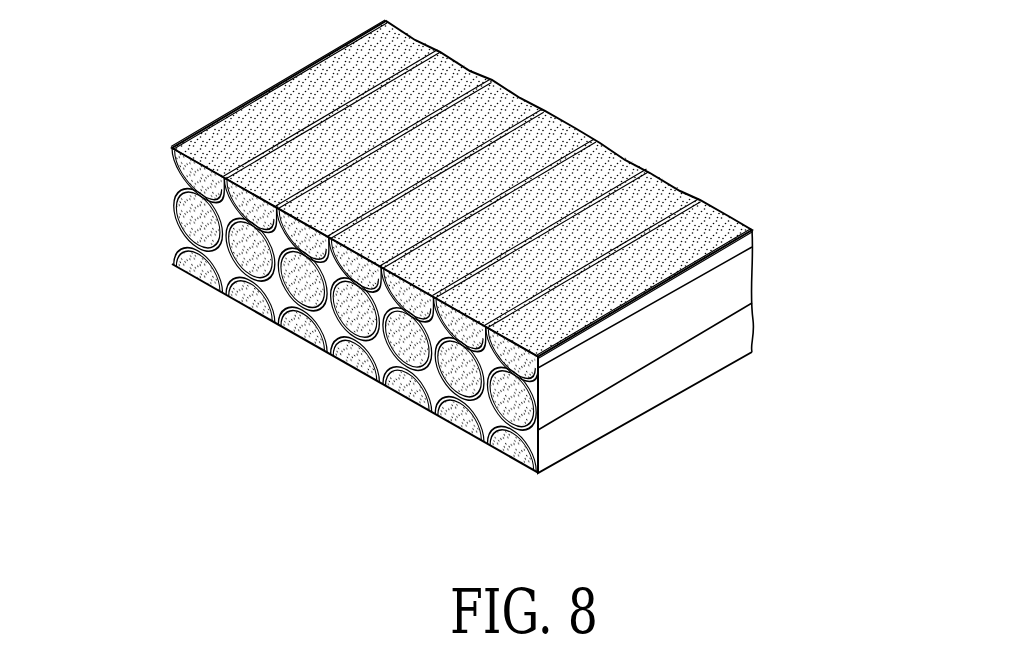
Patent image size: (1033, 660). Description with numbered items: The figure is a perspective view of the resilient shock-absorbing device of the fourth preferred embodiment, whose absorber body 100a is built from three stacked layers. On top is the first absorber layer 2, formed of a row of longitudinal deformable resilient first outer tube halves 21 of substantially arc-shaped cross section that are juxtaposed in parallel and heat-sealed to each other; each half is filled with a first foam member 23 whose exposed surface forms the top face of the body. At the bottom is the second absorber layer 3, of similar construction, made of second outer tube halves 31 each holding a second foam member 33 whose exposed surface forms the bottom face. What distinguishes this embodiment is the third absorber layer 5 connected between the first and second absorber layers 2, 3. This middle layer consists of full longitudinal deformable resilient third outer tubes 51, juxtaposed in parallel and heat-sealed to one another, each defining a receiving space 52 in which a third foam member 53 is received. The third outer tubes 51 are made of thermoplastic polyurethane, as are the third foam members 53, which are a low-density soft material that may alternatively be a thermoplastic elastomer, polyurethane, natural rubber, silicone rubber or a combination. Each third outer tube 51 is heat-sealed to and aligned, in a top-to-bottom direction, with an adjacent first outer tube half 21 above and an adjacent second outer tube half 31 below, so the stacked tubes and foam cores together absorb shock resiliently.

The absorber body 100a is at (581, 98).
The first absorber layer 2 is at (736, 202).
The first foam member 23 is at (215, 138).
The first outer tube half 21 is at (173, 167).
The third absorber layer 5 is at (645, 366).
The third outer tube 51 is at (173, 208).
The receiving space 52 is at (188, 218).
The third foam member 53 is at (193, 227).
The second absorber layer 3 is at (488, 460).
The second outer tube half 31 is at (394, 380).
The second foam member 33 is at (343, 358).